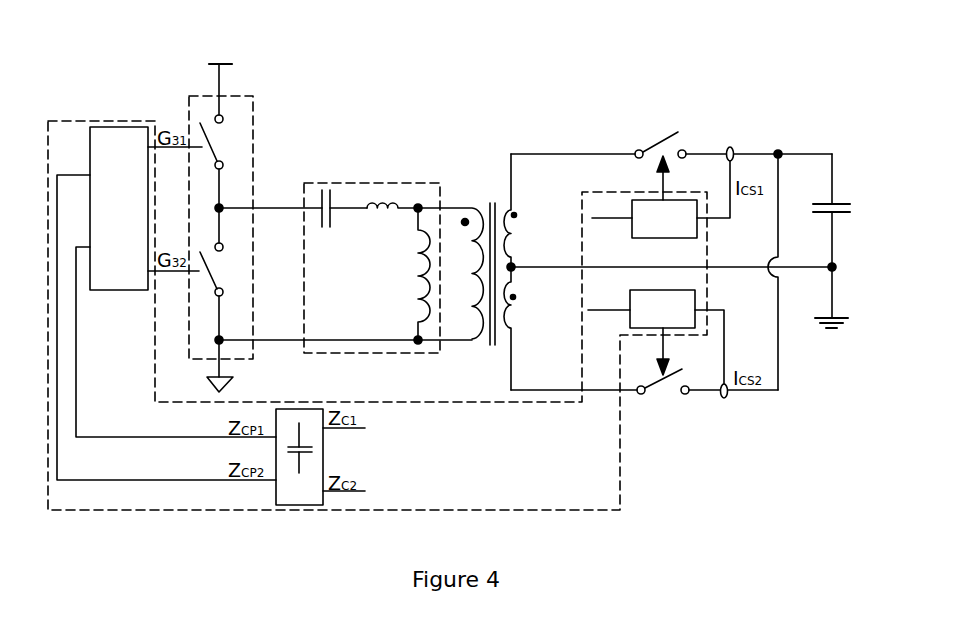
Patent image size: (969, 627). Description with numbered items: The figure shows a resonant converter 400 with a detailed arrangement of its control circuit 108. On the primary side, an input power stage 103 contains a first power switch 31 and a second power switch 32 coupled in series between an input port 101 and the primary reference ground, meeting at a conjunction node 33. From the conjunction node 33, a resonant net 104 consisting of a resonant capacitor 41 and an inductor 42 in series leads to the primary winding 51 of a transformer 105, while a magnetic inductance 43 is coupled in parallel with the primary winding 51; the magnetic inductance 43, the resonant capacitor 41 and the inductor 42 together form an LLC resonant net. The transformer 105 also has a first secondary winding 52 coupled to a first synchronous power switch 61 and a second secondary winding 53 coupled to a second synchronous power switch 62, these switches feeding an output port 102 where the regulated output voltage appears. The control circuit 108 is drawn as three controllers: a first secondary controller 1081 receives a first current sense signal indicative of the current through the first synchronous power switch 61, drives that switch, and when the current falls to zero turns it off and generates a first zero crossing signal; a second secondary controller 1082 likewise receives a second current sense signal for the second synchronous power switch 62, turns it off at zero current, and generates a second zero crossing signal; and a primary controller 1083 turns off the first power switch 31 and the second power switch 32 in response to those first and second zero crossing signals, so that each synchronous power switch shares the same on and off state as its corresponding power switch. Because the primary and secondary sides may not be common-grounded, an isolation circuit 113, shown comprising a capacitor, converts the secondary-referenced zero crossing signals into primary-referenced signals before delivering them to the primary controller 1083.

The resonant converter 400 is at (815, 75).
The input port 101 is at (220, 77).
The output port 102 is at (831, 227).
The input power stage 103 is at (260, 114).
The first power switch 31 is at (221, 161).
The second power switch 32 is at (220, 274).
The conjunction node 33 is at (225, 216).
The resonant net 104 is at (380, 183).
The resonant capacitor 41 is at (342, 221).
The inductor 42 is at (392, 220).
The magnetic inductance 43 is at (413, 274).
The transformer 105 is at (492, 202).
The primary winding 51 is at (450, 273).
The first secondary winding 52 is at (523, 210).
The second secondary winding 53 is at (522, 328).
The first synchronous power switch 61 is at (680, 140).
The second synchronous power switch 62 is at (678, 392).
The control circuit 108 is at (377, 315).
The first secondary controller 1081 is at (661, 197).
The second secondary controller 1082 is at (656, 335).
The primary controller 1083 is at (119, 208).
The isolation circuit 113 is at (320, 457).